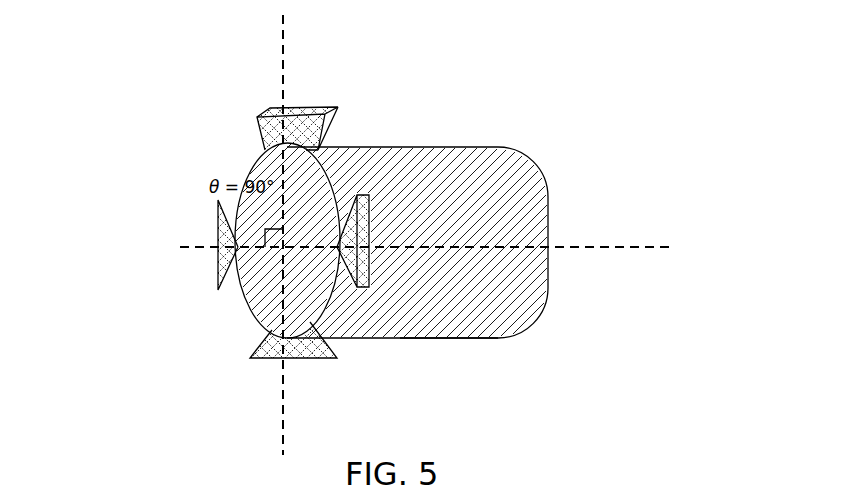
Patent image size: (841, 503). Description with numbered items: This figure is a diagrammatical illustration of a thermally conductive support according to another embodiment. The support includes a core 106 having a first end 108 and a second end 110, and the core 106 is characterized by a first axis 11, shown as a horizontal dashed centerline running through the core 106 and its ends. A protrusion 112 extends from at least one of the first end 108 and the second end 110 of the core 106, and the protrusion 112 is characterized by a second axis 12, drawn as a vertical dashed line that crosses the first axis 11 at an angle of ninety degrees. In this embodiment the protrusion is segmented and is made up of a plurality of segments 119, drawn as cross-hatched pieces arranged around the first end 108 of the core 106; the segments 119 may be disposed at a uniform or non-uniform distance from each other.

The first axis 11 is at (641, 247).
The second axis 12 is at (284, 27).
The core 106 is at (447, 146).
The first end 108 is at (282, 345).
The second end 110 is at (498, 338).
The protrusion 112 is at (143, 247).
The segments 119 is at (208, 273).